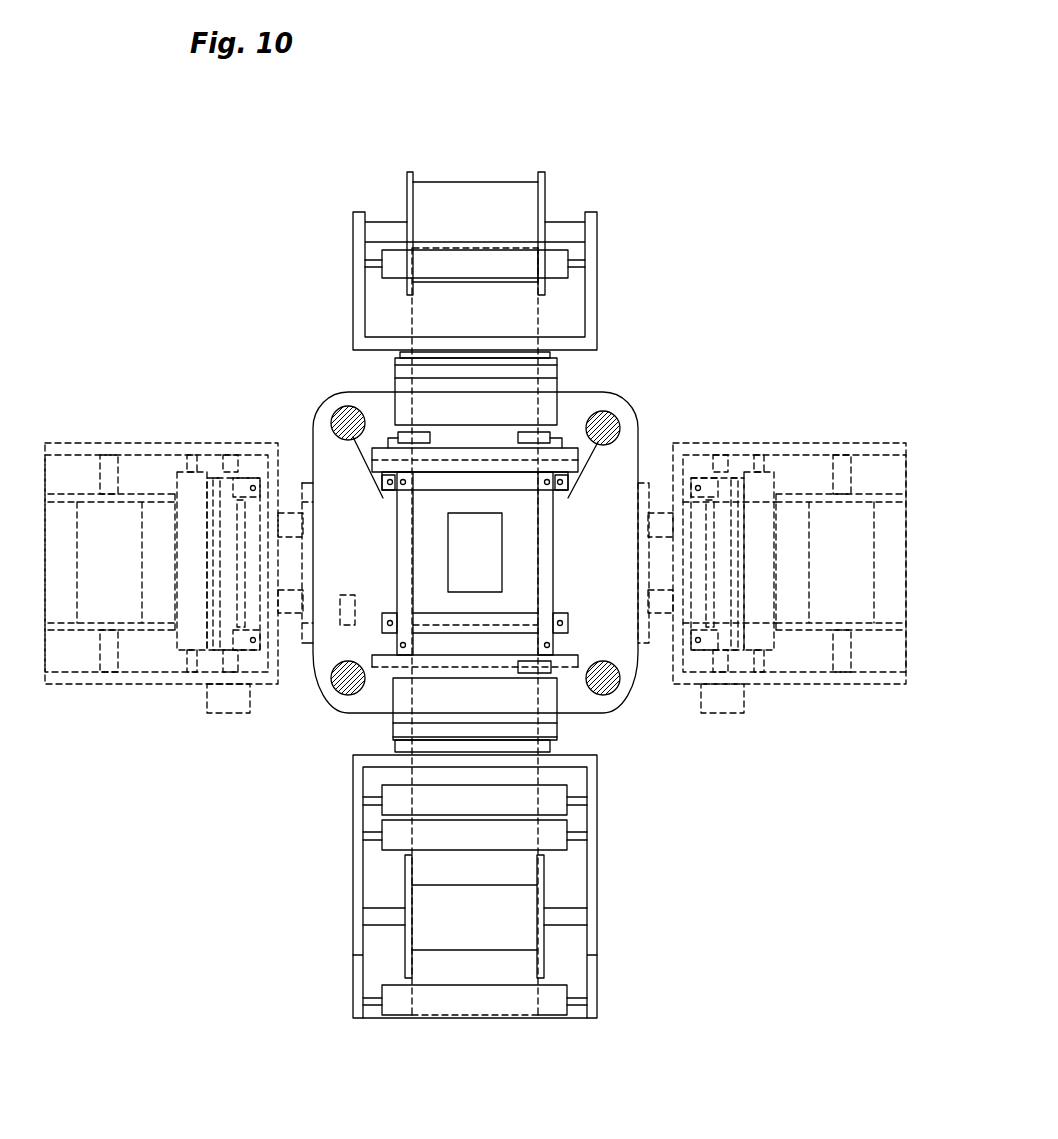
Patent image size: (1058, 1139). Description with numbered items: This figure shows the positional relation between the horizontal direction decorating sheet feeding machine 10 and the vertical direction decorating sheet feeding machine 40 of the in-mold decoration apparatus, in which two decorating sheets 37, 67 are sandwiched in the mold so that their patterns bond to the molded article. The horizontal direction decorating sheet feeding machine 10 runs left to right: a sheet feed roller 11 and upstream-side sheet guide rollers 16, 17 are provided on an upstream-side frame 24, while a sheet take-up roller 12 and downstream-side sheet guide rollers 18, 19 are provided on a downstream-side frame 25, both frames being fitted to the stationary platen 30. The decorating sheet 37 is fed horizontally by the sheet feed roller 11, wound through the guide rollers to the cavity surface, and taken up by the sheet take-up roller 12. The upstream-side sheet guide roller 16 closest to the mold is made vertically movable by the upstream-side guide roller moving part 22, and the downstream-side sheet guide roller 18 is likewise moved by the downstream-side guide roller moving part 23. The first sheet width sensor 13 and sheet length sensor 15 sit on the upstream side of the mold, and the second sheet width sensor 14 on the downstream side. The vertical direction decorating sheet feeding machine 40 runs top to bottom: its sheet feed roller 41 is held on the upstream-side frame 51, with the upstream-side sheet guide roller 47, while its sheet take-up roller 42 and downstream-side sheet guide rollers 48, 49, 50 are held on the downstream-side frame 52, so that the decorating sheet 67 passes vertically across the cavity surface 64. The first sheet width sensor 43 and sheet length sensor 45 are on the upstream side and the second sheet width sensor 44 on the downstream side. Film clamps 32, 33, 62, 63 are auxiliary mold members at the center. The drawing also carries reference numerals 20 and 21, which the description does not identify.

The horizontal direction decorating sheet feeding machine 10 is at (833, 358).
The sheet feed roller 11 is at (883, 500).
The sheet take-up roller 12 is at (83, 493).
The first sheet width sensor 13 is at (598, 622).
The second sheet width sensor 14 is at (458, 570).
The sheet length sensor 15 is at (568, 480).
The upstream-side sheet guide roller 16 is at (732, 473).
The upstream-side sheet guide roller 17 is at (772, 473).
The downstream-side sheet guide roller 18 is at (235, 470).
The downstream-side sheet guide roller 19 is at (187, 470).
The right roller holder 20 is at (735, 610).
The left roller holder 21 is at (220, 627).
The upstream-side guide roller moving part 22 is at (722, 713).
The downstream-side guide roller moving part 23 is at (222, 713).
The upstream-side frame 24 is at (878, 685).
The downstream-side frame 25 is at (73, 685).
The stationary platen 30 is at (600, 730).
The film clamp 32 is at (638, 480).
The film clamp 33 is at (353, 438).
The decorating sheet 37 is at (684, 630).
The vertical direction decorating sheet feeding machine 40 is at (479, 210).
The sheet feed roller 41 is at (407, 182).
The sheet take-up roller 42 is at (545, 940).
The first sheet width sensor 43 is at (543, 432).
The second sheet width sensor 44 is at (540, 672).
The sheet length sensor 45 is at (390, 432).
The upstream-side sheet guide roller 47 is at (572, 282).
The downstream-side sheet guide roller 48 is at (570, 810).
The downstream-side sheet guide roller 49 is at (570, 845).
The downstream-side sheet guide roller 50 is at (597, 1000).
The upstream-side frame 51 is at (355, 300).
The downstream-side frame 52 is at (355, 865).
The film clamp 62 is at (385, 480).
The film clamp 63 is at (387, 647).
The cavity surface 64 is at (400, 590).
The decorating sheet 67 is at (540, 318).